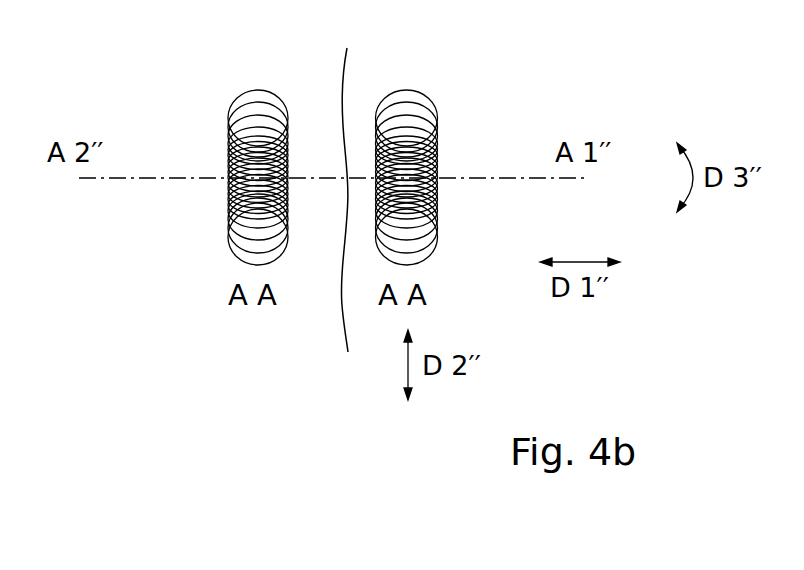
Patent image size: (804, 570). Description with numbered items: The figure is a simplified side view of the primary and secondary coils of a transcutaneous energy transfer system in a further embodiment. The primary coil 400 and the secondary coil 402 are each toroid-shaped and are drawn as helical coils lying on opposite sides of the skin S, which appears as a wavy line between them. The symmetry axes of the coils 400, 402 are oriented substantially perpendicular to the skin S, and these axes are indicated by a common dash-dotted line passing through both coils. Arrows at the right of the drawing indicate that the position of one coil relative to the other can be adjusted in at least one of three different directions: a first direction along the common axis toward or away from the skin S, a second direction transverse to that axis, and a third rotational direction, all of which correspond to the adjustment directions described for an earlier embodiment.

The primary coil 400 is at (255, 88).
The secondary coil 402 is at (410, 88).
The skin S is at (337, 177).